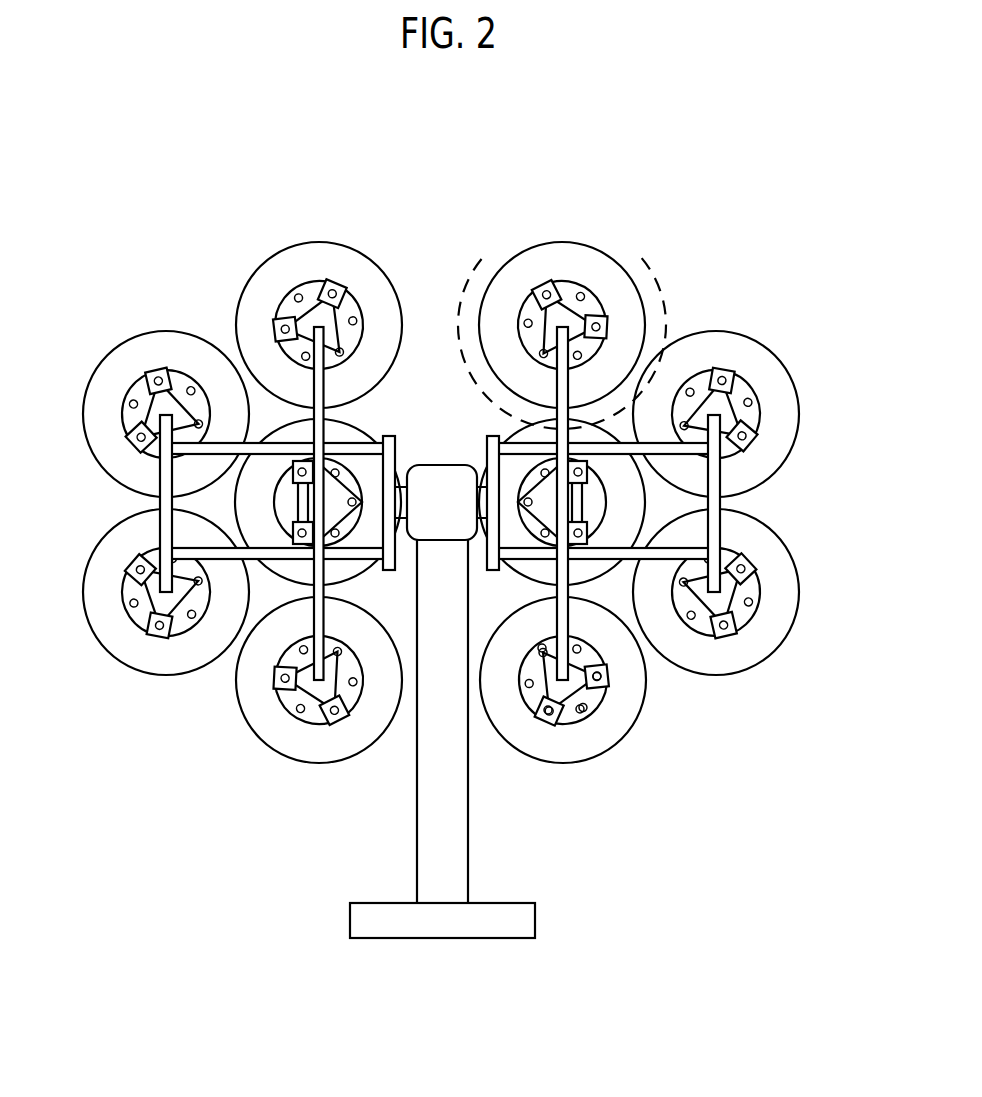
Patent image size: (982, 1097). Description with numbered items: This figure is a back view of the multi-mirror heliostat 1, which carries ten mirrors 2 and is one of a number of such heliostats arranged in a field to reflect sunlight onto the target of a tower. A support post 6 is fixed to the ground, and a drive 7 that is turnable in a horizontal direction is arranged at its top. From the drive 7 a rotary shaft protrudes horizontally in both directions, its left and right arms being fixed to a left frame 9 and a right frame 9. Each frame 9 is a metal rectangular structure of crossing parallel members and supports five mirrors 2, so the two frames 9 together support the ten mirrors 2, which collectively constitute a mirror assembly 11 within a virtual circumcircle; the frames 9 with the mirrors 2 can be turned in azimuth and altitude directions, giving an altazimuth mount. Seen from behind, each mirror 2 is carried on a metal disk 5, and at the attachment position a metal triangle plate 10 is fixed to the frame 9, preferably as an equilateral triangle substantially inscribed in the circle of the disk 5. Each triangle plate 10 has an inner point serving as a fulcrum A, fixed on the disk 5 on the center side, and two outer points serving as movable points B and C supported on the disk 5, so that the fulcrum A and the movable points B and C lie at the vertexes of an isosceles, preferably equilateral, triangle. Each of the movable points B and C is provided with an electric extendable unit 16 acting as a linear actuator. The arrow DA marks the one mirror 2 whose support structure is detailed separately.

The multi-mirror heliostat 1 is at (150, 773).
The mirror 2 is at (617, 277).
The disk 5 is at (585, 708).
The support post 6 is at (418, 783).
The drive 7 is at (453, 466).
The frame 9 is at (160, 483).
The triangle plate 10 is at (580, 712).
The mirror assembly 11 is at (203, 290).
The electric extendable unit 16 is at (743, 572).
The fulcrum A is at (542, 648).
The movable point B is at (540, 712).
The movable point C is at (600, 676).
The arrow DA is at (482, 258).